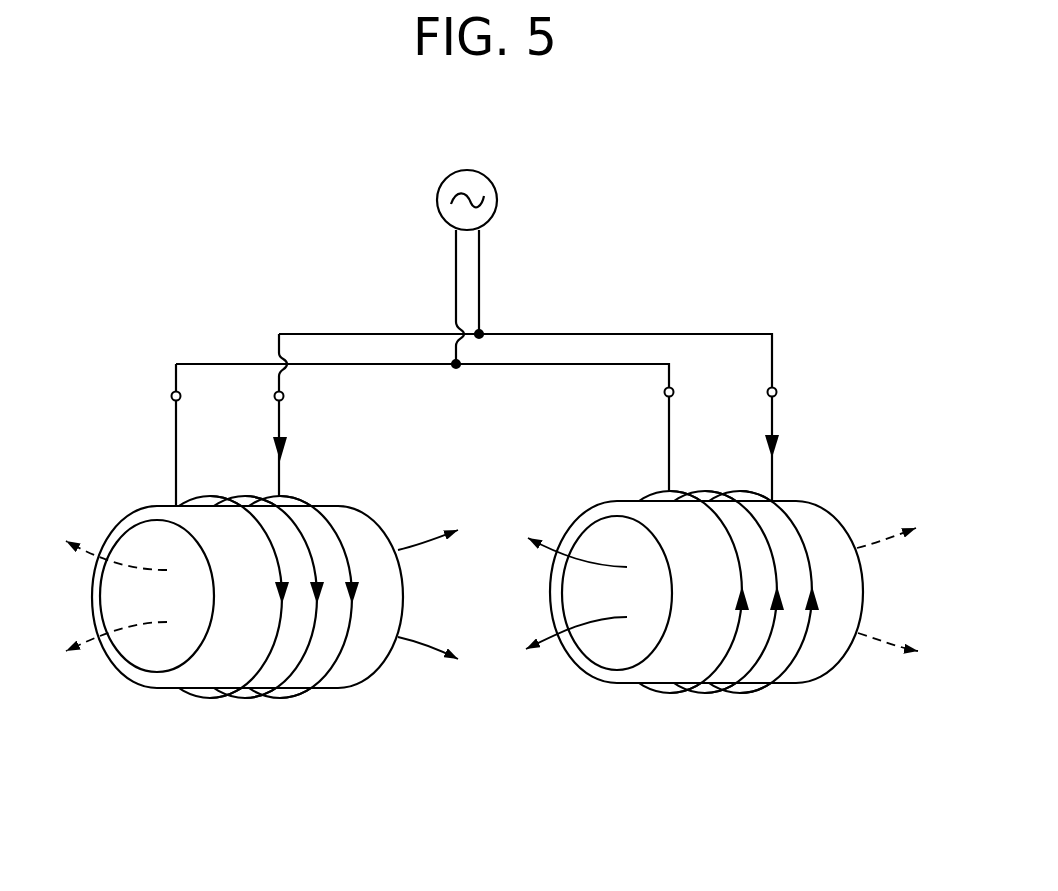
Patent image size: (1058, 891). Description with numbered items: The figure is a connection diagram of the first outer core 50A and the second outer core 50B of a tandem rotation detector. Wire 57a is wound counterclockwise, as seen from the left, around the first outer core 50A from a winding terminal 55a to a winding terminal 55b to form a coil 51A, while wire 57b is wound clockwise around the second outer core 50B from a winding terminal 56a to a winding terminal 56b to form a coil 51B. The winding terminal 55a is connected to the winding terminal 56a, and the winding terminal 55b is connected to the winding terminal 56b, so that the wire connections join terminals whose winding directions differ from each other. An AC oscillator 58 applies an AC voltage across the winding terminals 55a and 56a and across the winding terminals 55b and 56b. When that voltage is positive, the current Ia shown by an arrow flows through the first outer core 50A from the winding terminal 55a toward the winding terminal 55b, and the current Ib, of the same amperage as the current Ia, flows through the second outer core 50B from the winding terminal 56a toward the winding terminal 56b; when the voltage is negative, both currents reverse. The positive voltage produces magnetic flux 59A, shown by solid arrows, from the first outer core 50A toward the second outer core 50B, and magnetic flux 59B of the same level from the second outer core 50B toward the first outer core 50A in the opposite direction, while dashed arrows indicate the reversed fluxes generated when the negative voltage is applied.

The first outer core 50A is at (725, 566).
The second outer core 50B is at (267, 570).
The coil 51A is at (737, 603).
The coil 51B is at (280, 600).
The winding terminal 55a is at (775, 387).
The winding terminal 55b is at (671, 387).
The winding terminal 56a is at (276, 391).
The winding terminal 56b is at (173, 391).
The wire 57a is at (792, 667).
The wire 57b is at (330, 670).
The AC oscillator 58 is at (497, 199).
The magnetic flux 59A is at (548, 641).
The magnetic flux 59B is at (414, 642).
The current Ia is at (770, 414).
The current Ib is at (283, 423).